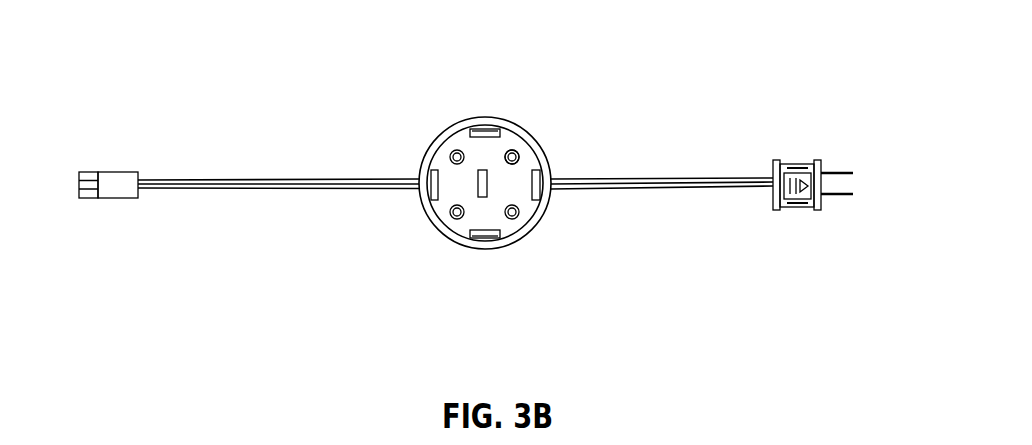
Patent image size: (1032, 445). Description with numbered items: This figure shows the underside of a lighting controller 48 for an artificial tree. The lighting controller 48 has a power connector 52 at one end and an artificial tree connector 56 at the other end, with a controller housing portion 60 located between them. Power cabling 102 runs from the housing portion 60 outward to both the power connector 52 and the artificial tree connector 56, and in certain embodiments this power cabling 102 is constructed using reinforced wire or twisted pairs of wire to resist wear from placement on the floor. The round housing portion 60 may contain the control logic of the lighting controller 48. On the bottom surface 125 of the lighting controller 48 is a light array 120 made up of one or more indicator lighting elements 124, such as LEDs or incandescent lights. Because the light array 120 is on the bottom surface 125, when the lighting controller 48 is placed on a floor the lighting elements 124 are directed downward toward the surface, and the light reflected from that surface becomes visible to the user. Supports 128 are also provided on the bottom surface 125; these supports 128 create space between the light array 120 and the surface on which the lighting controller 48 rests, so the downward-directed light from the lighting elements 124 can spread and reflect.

The lighting controller 48 is at (498, 116).
The power connector 52 is at (802, 162).
The artificial tree connector 56 is at (123, 193).
The controller housing portion 60 is at (535, 228).
The power cabling 102 is at (277, 188).
The light array 120 is at (513, 152).
The indicator lighting element 124 is at (520, 156).
The bottom surface 125 is at (471, 163).
The support 128 is at (472, 238).